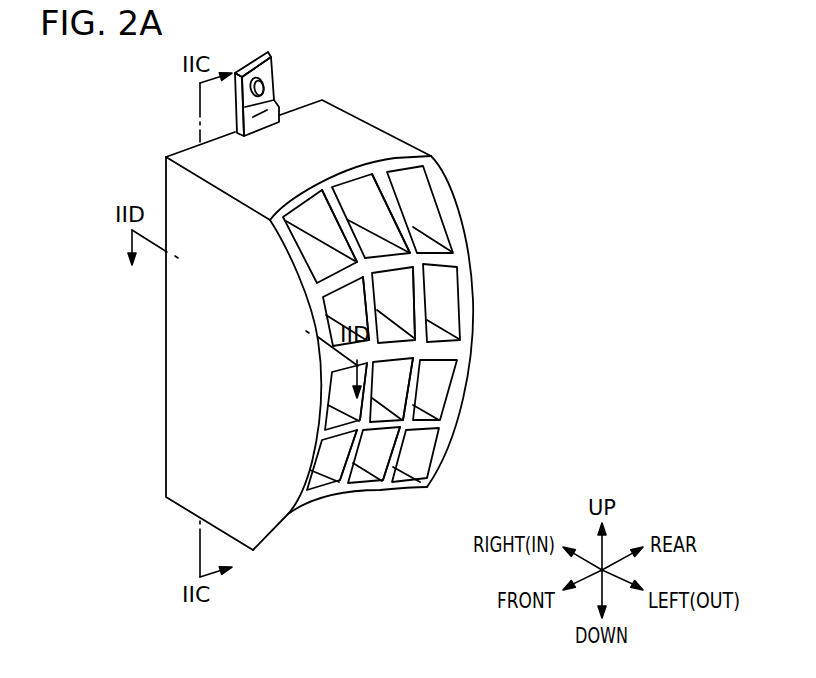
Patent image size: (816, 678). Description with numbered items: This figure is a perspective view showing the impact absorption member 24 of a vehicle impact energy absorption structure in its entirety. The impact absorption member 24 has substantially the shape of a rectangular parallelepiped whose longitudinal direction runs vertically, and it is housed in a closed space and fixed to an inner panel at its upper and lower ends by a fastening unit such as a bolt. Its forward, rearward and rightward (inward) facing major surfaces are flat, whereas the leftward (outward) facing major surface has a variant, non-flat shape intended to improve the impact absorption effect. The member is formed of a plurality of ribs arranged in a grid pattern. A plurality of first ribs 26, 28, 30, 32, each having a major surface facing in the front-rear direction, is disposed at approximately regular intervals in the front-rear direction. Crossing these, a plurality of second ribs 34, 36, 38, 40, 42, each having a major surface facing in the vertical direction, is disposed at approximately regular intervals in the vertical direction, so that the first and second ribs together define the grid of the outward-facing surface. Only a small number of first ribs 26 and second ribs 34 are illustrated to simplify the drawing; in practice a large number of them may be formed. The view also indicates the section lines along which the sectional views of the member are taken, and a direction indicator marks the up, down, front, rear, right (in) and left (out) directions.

The impact absorption member 24 is at (360, 77).
The first rib 26 is at (298, 495).
The first rib 28 is at (343, 488).
The first rib 30 is at (380, 488).
The first rib 32 is at (412, 488).
The second rib 34 is at (402, 163).
The second rib 36 is at (436, 253).
The second rib 38 is at (440, 342).
The second rib 40 is at (430, 422).
The second rib 42 is at (413, 488).